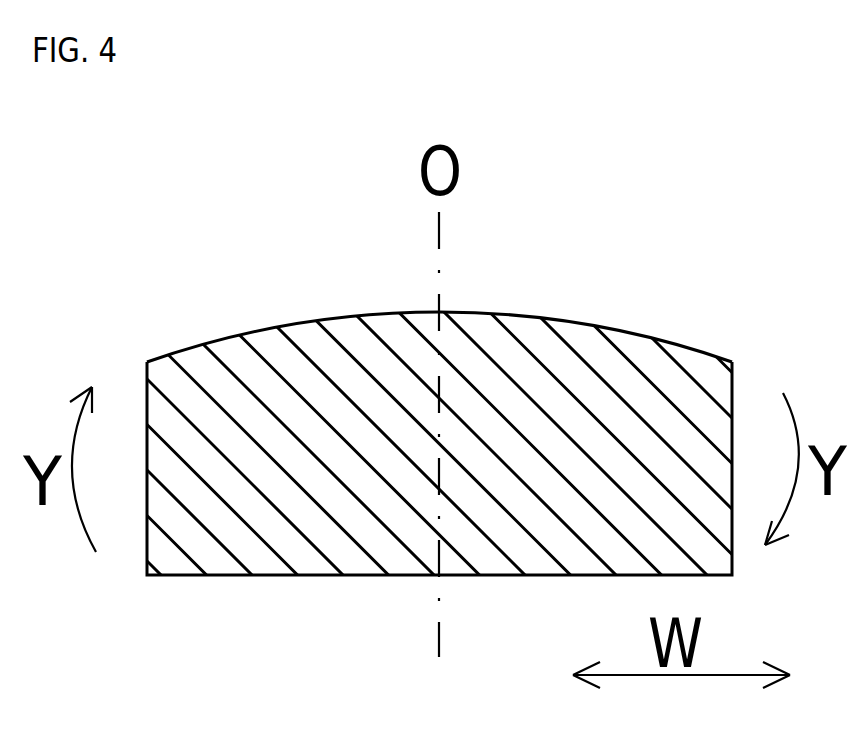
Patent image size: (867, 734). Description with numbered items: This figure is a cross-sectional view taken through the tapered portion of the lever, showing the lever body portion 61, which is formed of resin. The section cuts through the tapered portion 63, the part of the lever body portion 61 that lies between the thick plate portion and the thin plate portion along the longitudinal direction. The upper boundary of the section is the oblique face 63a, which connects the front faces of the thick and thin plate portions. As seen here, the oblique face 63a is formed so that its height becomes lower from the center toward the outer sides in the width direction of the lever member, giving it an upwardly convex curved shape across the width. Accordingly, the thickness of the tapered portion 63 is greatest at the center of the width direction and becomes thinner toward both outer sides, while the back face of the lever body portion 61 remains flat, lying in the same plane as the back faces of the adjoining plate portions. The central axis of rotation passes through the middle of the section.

The lever body portion 61 is at (433, 341).
The tapered portion 63 is at (580, 343).
The oblique face 63a is at (262, 330).